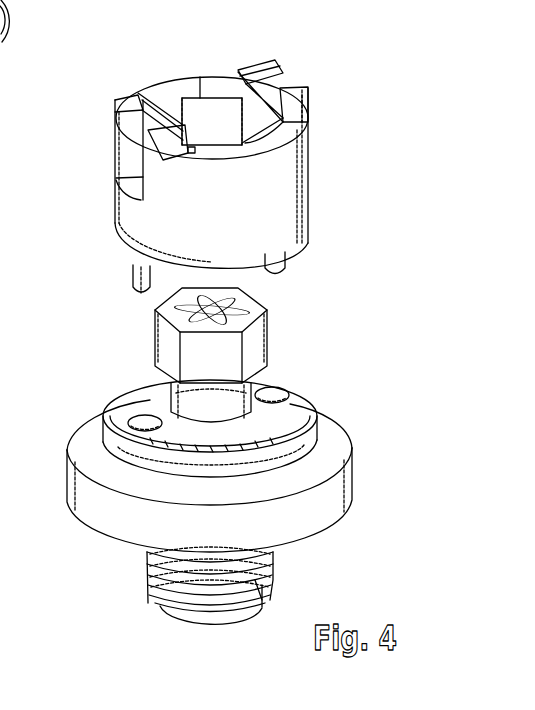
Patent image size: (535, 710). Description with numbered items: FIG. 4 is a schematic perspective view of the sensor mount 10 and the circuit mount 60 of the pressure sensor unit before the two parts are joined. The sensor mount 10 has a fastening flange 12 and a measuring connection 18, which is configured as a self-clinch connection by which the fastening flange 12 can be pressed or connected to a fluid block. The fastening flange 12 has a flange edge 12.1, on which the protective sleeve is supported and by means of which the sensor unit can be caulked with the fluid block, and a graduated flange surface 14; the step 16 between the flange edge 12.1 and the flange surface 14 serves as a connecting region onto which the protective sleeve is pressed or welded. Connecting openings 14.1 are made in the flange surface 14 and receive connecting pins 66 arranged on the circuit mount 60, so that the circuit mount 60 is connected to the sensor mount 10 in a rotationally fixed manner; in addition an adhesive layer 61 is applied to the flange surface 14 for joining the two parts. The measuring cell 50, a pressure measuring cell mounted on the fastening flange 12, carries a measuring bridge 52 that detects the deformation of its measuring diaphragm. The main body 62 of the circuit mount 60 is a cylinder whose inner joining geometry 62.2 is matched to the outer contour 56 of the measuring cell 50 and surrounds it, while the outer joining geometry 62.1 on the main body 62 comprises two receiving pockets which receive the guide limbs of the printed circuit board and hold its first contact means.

The sensor mount 10 is at (61, 332).
The fastening flange 12 is at (346, 491).
The flange edge 12.1 is at (78, 440).
The flange surface 14 is at (160, 387).
The connecting openings 14.1 is at (145, 424).
The step 16 is at (328, 446).
The measuring connection 18 is at (150, 595).
The measuring cell 50 is at (303, 312).
The measuring bridge 52 is at (249, 320).
The outer contour 56 is at (264, 345).
The circuit mount 60 is at (331, 58).
The adhesive layer 61 is at (291, 421).
The main body 62 is at (290, 186).
The outer joining geometry 62.1 is at (296, 78).
The inner joining geometry 62.2 is at (185, 99).
The connecting pins 66 is at (137, 273).